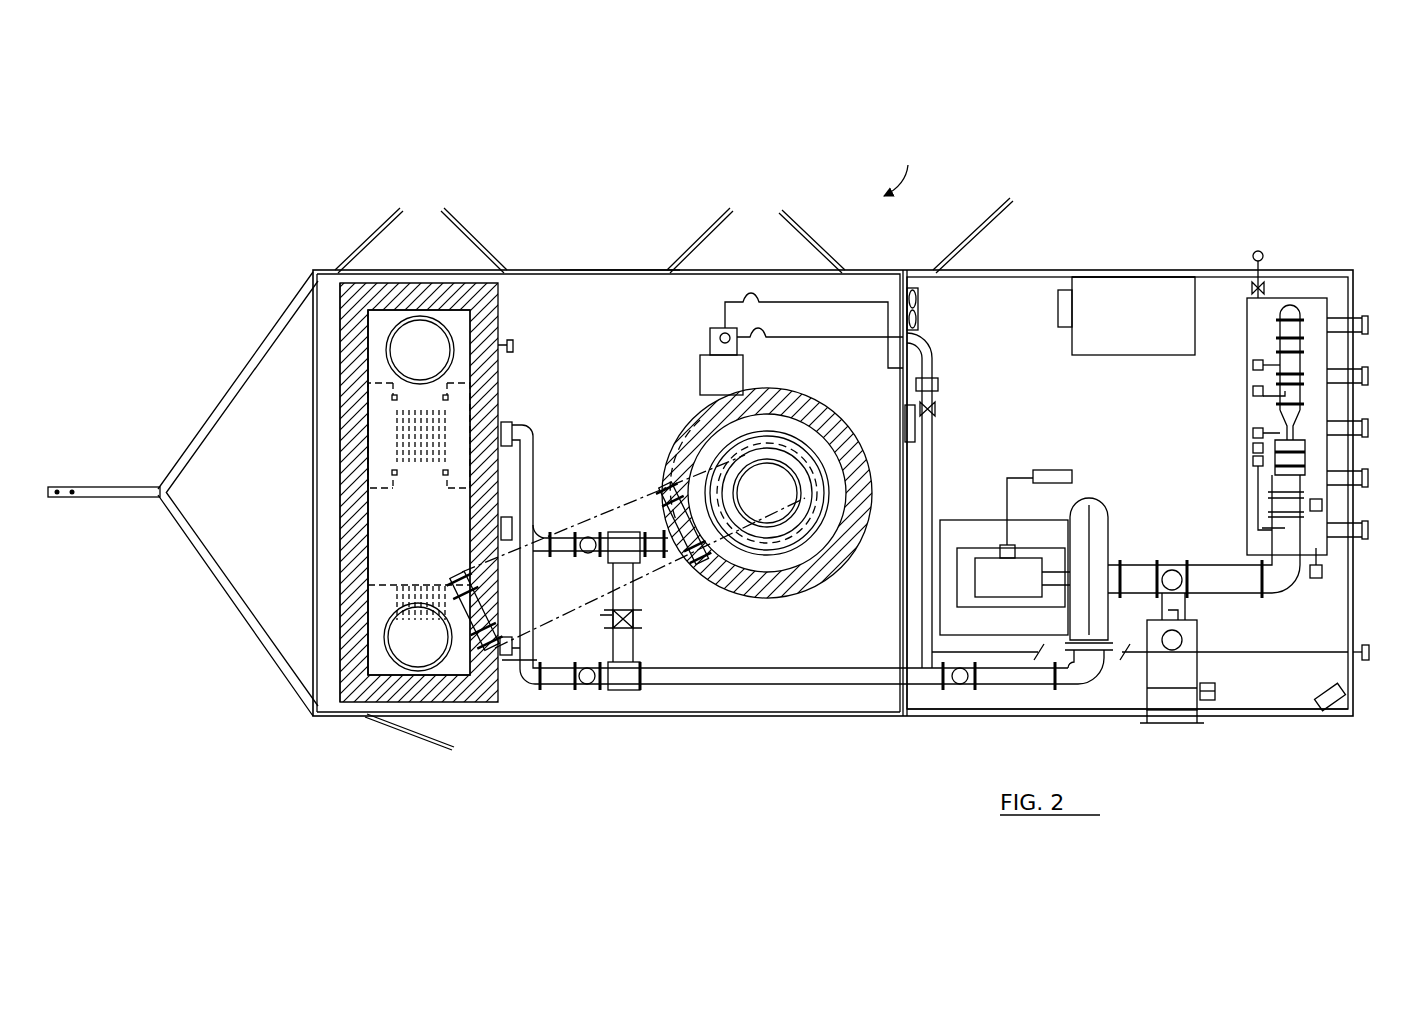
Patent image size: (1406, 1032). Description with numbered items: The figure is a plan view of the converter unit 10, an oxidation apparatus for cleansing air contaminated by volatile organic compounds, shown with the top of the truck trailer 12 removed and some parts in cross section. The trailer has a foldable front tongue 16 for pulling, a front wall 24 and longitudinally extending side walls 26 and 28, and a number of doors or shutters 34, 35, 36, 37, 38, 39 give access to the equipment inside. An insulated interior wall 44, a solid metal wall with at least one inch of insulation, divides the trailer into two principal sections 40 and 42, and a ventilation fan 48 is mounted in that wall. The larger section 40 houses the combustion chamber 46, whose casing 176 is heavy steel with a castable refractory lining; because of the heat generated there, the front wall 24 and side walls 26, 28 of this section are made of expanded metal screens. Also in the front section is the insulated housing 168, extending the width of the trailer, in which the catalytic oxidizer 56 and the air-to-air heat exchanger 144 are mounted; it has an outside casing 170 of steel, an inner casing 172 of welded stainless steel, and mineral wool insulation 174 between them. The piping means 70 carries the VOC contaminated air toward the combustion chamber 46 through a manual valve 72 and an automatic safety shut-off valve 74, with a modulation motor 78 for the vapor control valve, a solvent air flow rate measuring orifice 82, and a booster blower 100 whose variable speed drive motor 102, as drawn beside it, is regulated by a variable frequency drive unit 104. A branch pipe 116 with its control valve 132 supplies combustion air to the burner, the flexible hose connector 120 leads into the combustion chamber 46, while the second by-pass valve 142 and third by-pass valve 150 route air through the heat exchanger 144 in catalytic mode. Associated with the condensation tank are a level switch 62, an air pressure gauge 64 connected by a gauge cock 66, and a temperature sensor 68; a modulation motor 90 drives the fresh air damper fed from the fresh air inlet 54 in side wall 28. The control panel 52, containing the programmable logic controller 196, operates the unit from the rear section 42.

The converter unit 10 is at (901, 167).
The truck trailer 12 is at (1163, 270).
The foldable front tongue 16 is at (110, 487).
The front wall 24 is at (313, 500).
The side wall 26 is at (615, 268).
The side wall 28 is at (775, 718).
The door or shutter 34 is at (358, 252).
The door or shutter 35 is at (487, 253).
The door or shutter 36 is at (688, 252).
The door or shutter 37 is at (820, 252).
The door or shutter 38 is at (962, 252).
The door or shutter 39 is at (400, 735).
The principal section 40 is at (612, 369).
The principal section 42 is at (1107, 418).
The insulated interior wall 44 is at (900, 578).
The combustion chamber 46 is at (808, 396).
The ventilation fan 48 is at (900, 300).
The control panel 52 is at (1146, 320).
The fresh air inlet 54 is at (1170, 722).
The catalytic oxidizer 56 is at (390, 598).
The level switch 62 is at (1322, 570).
The air pressure gauge 64 is at (1262, 256).
The gauge cock 66 is at (1268, 290).
The temperature sensor 68 is at (1250, 432).
The piping means 70 is at (1220, 565).
The manual valve 72 is at (1265, 338).
The automatic safety shut-off valve 74 is at (1252, 362).
The modulation motor 78 is at (1252, 390).
The solvent air flow rate measuring orifice 82 is at (1322, 504).
The modulation motor 90 is at (1212, 685).
The booster blower 100 is at (1108, 530).
The engine 102 is at (1000, 545).
The variable frequency drive unit 104 is at (1052, 470).
The branch pipe 116 is at (935, 470).
The flexible hose connector 120 is at (655, 560).
The control valve 132 is at (940, 380).
The second by-pass valve 142 is at (590, 690).
The air-to-air heat exchanger 144 is at (388, 414).
The third by-pass valve 150 is at (610, 536).
The insulated housing 168 is at (340, 385).
The outside casing 170 is at (340, 565).
The inner casing 172 is at (380, 550).
The insulation 174 is at (340, 425).
The casing 176 is at (690, 420).
The programmable logic controller 196 is at (1103, 282).